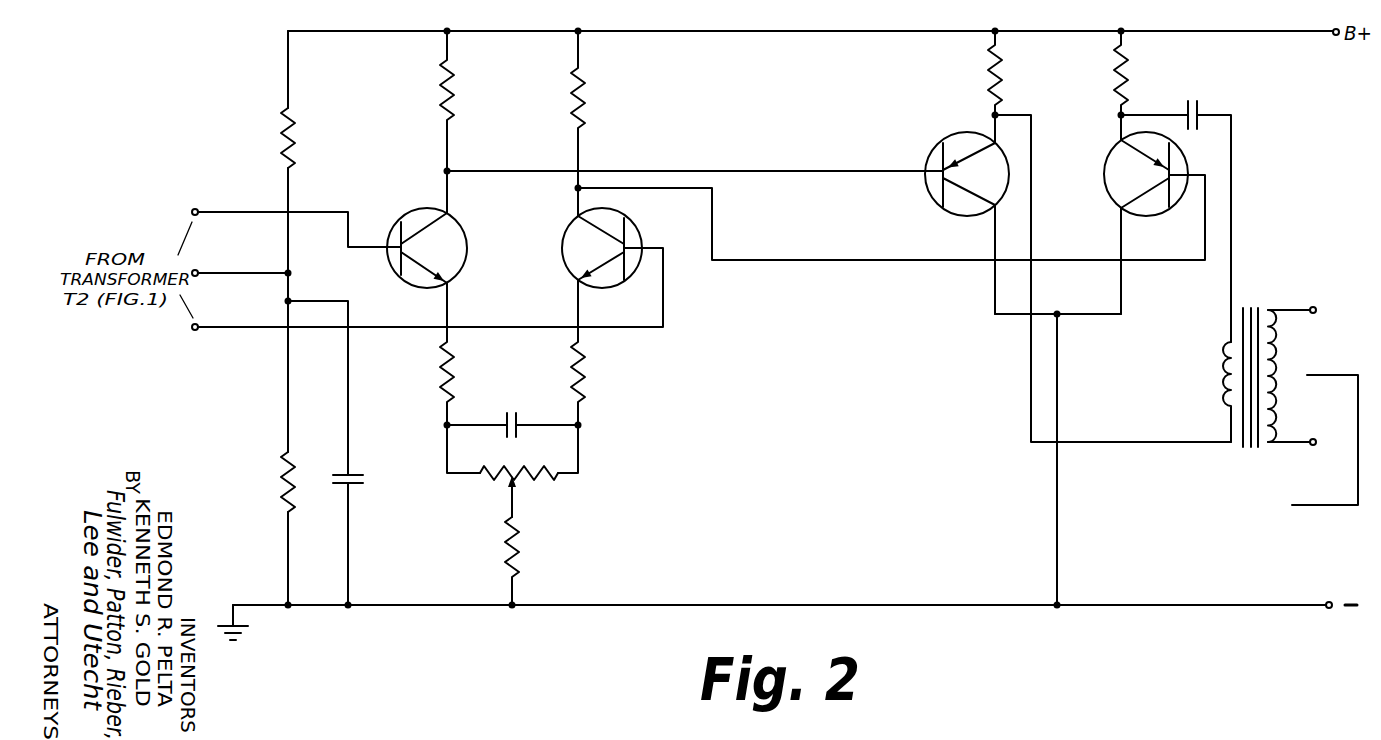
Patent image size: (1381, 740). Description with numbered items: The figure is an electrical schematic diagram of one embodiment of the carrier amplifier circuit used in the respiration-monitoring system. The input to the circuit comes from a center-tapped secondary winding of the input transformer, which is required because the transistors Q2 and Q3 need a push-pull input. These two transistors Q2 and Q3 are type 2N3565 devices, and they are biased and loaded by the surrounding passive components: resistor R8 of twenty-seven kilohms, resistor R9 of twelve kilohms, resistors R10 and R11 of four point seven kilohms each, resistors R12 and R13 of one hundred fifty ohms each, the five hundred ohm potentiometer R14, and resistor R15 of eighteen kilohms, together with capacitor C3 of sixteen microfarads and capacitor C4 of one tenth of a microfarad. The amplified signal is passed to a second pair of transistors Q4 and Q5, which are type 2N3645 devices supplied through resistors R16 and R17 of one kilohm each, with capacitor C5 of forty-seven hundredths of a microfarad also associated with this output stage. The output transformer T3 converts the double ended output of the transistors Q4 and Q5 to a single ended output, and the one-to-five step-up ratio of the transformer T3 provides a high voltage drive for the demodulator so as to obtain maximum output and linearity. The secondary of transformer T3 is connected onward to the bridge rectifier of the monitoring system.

The resistor R8 is at (296, 136).
The resistor R9 is at (283, 475).
The resistor R10 is at (443, 84).
The resistor R11 is at (585, 69).
The resistor R12 is at (455, 376).
The resistor R13 is at (585, 384).
The potentiometer R14 is at (530, 487).
The resistor R15 is at (520, 549).
The resistor R16 is at (1002, 81).
The resistor R17 is at (1128, 81).
The capacitor C3 is at (366, 479).
The capacitor C4 is at (526, 390).
The capacitor C5 is at (1200, 106).
The transistor Q2 is at (467, 248).
The transistor Q3 is at (612, 283).
The transistor Q4 is at (940, 138).
The transistor Q5 is at (1148, 215).
The output transformer T3 is at (1259, 294).